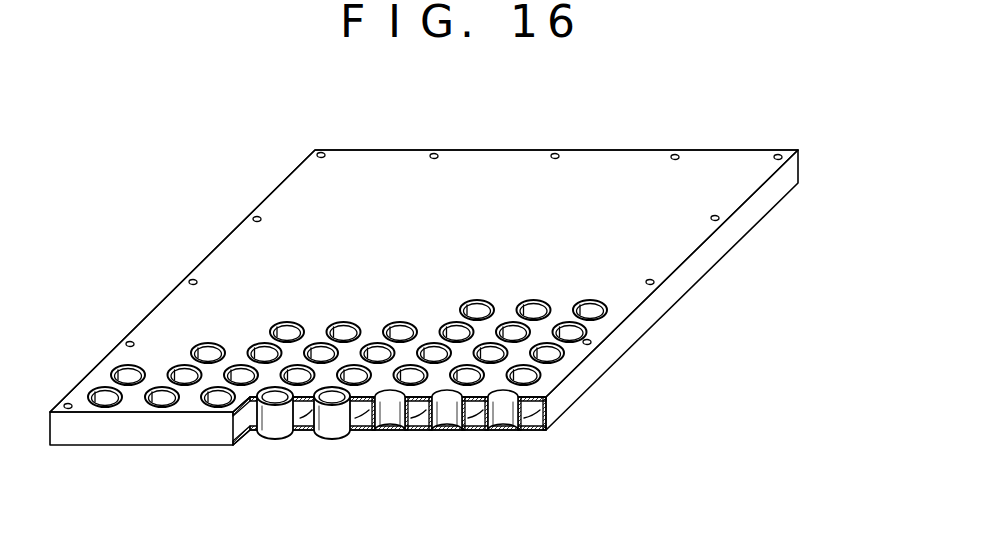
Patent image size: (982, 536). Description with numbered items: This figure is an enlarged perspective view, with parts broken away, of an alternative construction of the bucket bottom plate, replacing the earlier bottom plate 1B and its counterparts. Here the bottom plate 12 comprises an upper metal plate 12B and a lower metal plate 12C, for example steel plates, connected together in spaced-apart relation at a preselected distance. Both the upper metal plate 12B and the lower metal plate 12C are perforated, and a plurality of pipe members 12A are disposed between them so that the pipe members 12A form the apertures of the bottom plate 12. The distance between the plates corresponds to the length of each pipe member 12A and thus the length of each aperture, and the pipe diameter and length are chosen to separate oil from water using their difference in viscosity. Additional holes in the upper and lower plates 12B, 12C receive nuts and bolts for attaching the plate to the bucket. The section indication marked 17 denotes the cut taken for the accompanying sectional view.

The bottom plate 1B is at (623, 272).
The bottom plate 12 is at (668, 257).
The pipe members 12A is at (573, 330).
The upper metal plate 12B is at (590, 257).
The lower metal plate 12C is at (522, 431).
The section line for FIG. 17 is at (172, 267).